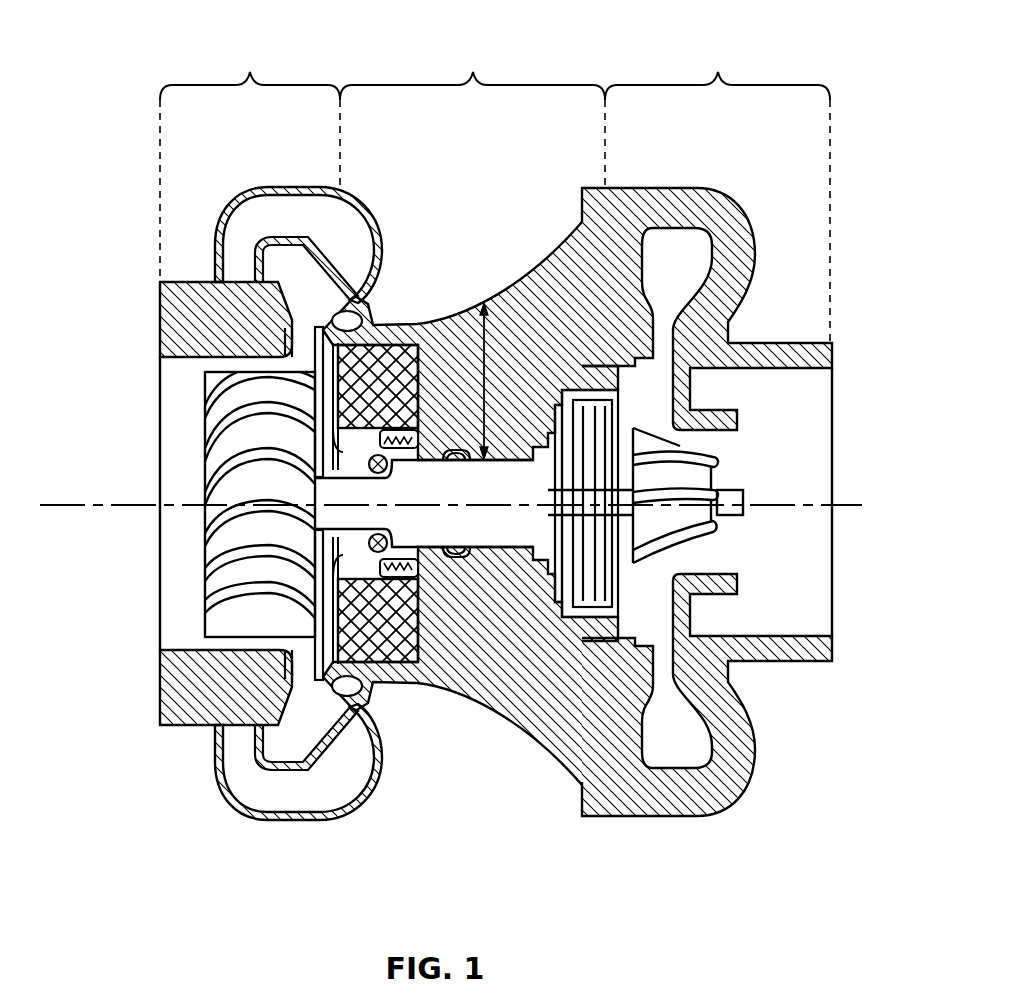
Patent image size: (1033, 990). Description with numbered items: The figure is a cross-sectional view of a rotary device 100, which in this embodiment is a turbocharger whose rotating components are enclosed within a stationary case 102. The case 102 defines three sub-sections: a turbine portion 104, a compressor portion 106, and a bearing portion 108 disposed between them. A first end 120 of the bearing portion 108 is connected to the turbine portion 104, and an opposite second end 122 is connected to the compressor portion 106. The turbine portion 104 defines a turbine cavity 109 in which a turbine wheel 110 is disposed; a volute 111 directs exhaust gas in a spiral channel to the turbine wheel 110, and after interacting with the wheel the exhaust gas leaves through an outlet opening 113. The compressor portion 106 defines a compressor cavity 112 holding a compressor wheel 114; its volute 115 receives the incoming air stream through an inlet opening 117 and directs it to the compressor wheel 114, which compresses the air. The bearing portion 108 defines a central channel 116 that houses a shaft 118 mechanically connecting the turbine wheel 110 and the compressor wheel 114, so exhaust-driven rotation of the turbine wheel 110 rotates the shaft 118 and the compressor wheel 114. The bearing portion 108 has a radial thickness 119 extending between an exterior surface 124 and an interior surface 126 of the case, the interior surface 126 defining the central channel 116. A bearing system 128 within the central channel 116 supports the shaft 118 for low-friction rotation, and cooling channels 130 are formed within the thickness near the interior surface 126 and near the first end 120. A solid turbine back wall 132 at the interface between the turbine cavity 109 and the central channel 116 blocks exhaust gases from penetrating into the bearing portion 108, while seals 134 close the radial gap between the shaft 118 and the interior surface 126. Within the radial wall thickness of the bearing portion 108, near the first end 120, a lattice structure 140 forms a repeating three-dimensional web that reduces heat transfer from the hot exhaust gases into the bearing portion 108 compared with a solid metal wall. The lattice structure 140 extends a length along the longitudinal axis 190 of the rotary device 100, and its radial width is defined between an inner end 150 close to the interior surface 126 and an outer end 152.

The rotary device 100 is at (180, 48).
The stationary case 102 is at (546, 280).
The turbine portion 104 is at (250, 72).
The compressor portion 106 is at (718, 72).
The bearing portion 108 is at (473, 72).
The turbine cavity 109 is at (186, 398).
The turbine wheel 110 is at (207, 447).
The volute 111 is at (266, 822).
The compressor cavity 112 is at (640, 594).
The outlet opening 113 is at (158, 623).
The compressor wheel 114 is at (682, 457).
The volute 115 is at (683, 793).
The central channel 116 is at (510, 553).
The inlet opening 117 is at (830, 598).
The shaft 118 is at (511, 485).
The radial thickness 119 is at (498, 300).
The first end 120 is at (332, 293).
The second end 122 is at (608, 182).
The exterior surface 124 is at (484, 307).
The interior surface 126 is at (455, 447).
The bearing system 128 is at (461, 553).
The cooling channels 130 is at (333, 553).
The turbine back wall 132 is at (312, 362).
The seals 134 is at (410, 578).
The lattice structure 140 is at (414, 350).
The inner end 150 is at (362, 453).
The outer end 152 is at (398, 335).
The longitudinal axis 190 is at (55, 505).